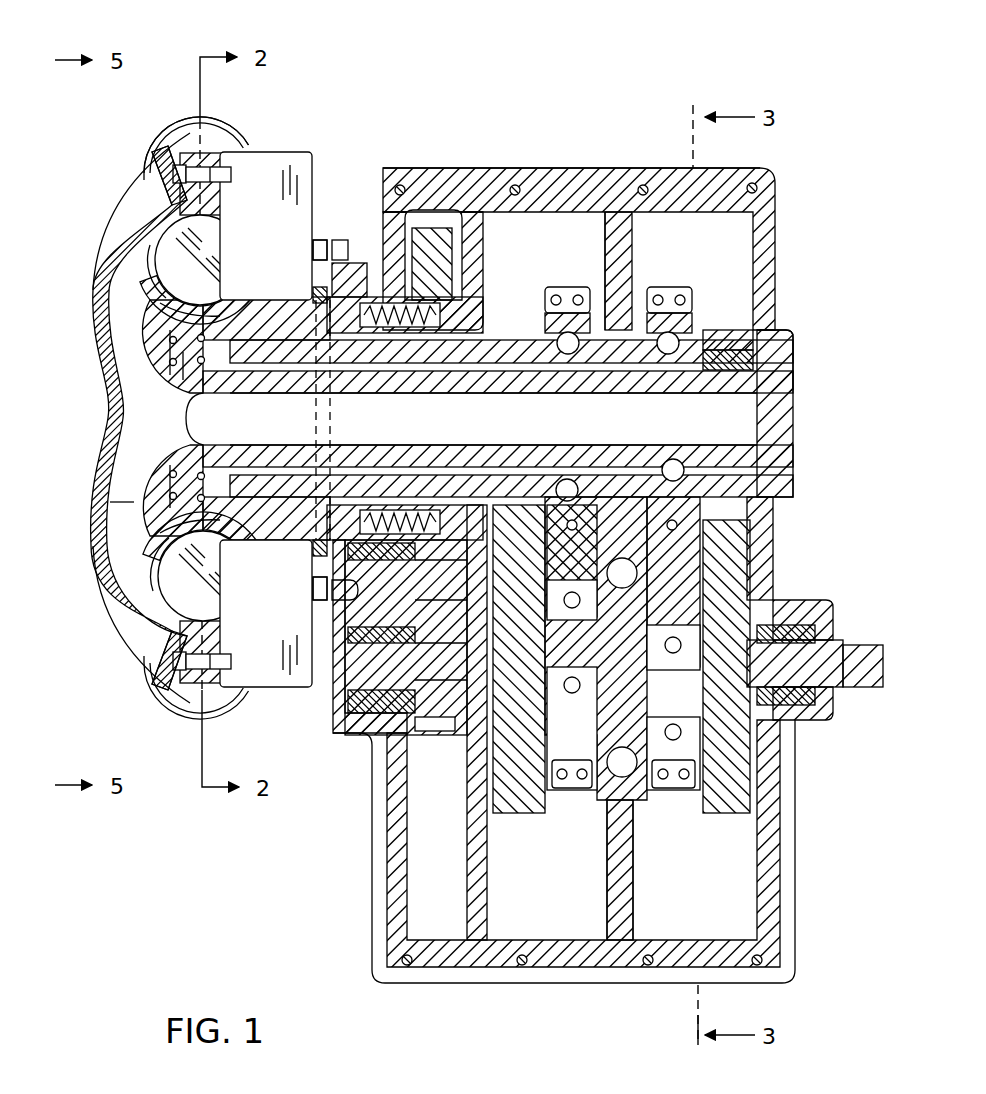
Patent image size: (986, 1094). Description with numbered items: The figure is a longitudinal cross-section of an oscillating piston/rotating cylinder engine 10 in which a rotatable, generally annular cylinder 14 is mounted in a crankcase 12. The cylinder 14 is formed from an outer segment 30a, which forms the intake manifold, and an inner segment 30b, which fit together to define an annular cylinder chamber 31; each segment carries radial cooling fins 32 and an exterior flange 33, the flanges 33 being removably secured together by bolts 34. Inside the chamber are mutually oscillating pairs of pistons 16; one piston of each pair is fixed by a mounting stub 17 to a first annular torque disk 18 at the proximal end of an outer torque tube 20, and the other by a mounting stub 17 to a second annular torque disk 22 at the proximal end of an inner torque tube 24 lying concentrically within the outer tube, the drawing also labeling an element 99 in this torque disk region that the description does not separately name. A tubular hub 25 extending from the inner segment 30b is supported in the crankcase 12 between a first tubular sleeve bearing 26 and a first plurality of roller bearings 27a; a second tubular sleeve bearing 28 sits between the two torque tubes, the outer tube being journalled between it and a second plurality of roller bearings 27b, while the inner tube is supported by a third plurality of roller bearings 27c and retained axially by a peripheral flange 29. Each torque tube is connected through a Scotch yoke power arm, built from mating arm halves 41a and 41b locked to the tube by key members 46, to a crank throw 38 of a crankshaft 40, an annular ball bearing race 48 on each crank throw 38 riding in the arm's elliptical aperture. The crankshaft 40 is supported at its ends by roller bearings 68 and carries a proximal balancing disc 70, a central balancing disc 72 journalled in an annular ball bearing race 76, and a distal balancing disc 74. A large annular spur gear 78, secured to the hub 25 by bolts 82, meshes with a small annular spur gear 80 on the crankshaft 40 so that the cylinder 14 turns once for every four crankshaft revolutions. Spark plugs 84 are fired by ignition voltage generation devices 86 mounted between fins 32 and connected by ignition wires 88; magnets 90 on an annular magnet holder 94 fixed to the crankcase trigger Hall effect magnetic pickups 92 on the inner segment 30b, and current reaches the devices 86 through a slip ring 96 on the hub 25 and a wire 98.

The oscillating piston/rotating cylinder engine 10 is at (522, 148).
The crankcase 12 is at (776, 242).
The annular cylinder 14 is at (252, 130).
The pistons 16 is at (168, 262).
The mounting stub 17 is at (170, 312).
The first annular torque disk 18 is at (172, 344).
The outer torque tube 20 is at (481, 419).
The second annular torque disk 22 is at (178, 388).
The inner torque tube 24 is at (188, 417).
The tubular hub 25 is at (272, 362).
The first tubular sleeve bearing 26 is at (476, 396).
The first plurality of roller bearings 27a is at (392, 212).
The second plurality of roller bearings 27b is at (604, 300).
The third plurality of roller bearings 27c is at (755, 345).
The second tubular sleeve bearing 28 is at (418, 386).
The peripheral flange 29 is at (795, 347).
The outer cylinder segment 30a is at (107, 418).
The inner cylinder segment 30b is at (240, 218).
The annular cylinder chamber 31 is at (124, 490).
The radial cooling fins 32 is at (100, 242).
The exterior flange 33 is at (168, 138).
The bolts 34 is at (245, 168).
The crank throw 38 is at (542, 545).
The crankshaft 40 is at (333, 733).
The arm half 41a is at (545, 300).
The arm half 41b is at (692, 300).
The key member 46 is at (560, 356).
The annular ball bearing race 48 is at (568, 790).
The roller bearings 68 is at (800, 602).
The proximal balancing disc 70 is at (520, 813).
The central balancing disc 72 is at (580, 790).
The distal balancing disc 74 is at (735, 813).
The annular ball bearing race 76 is at (620, 860).
The large annular spur gear 78 is at (447, 172).
The small annular spur gear 80 is at (440, 733).
The bolts 82 is at (480, 258).
The spark plugs 84 is at (156, 194).
The ignition voltage generation device 86 is at (312, 170).
The ignition wires 88 is at (200, 122).
The magnets 90 is at (323, 240).
The Hall effect magnetic pickups 92 is at (313, 250).
The annular magnet holder 94 is at (375, 305).
The slip ring 96 is at (313, 292).
The wire 98 is at (316, 552).
The ring 99 is at (172, 361).